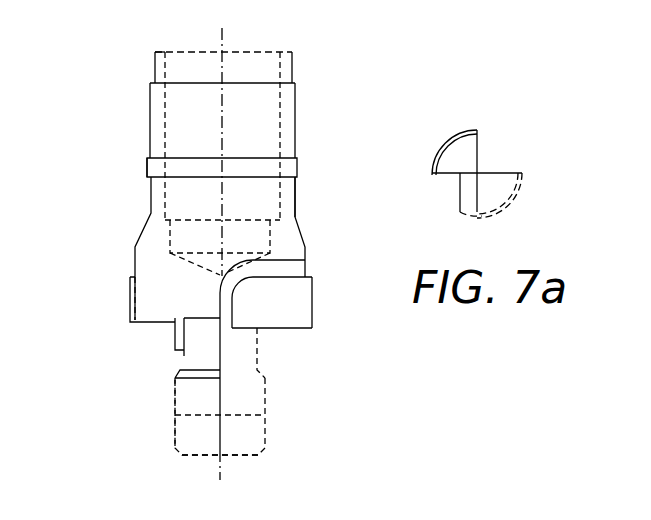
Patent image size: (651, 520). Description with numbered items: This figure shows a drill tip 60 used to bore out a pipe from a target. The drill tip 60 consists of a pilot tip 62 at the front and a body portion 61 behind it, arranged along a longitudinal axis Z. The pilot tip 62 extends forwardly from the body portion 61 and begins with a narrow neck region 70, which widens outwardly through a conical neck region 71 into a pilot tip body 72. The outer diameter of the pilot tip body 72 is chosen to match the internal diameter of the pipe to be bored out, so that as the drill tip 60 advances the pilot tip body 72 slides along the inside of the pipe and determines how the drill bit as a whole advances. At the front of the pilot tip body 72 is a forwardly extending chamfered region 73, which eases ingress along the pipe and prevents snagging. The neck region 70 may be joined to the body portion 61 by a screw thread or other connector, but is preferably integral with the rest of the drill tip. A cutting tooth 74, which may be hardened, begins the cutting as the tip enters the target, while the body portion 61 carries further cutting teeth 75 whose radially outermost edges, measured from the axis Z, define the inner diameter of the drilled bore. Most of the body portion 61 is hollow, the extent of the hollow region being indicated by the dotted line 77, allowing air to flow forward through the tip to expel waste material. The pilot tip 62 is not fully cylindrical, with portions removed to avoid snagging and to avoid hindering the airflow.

The drill tip 60 is at (120, 84).
The body portion 61 is at (312, 210).
The pilot tip 62 is at (286, 409).
The narrow neck region 70 is at (259, 346).
The conical neck region 71 is at (177, 375).
The pilot tip body 72 is at (178, 431).
The chamfered region 73 is at (171, 460).
The cutting tooth 74 is at (164, 339).
The cutting teeth 75 is at (313, 303).
The dotted line 77 is at (175, 58).
The longitudinal axis Z is at (225, 42).